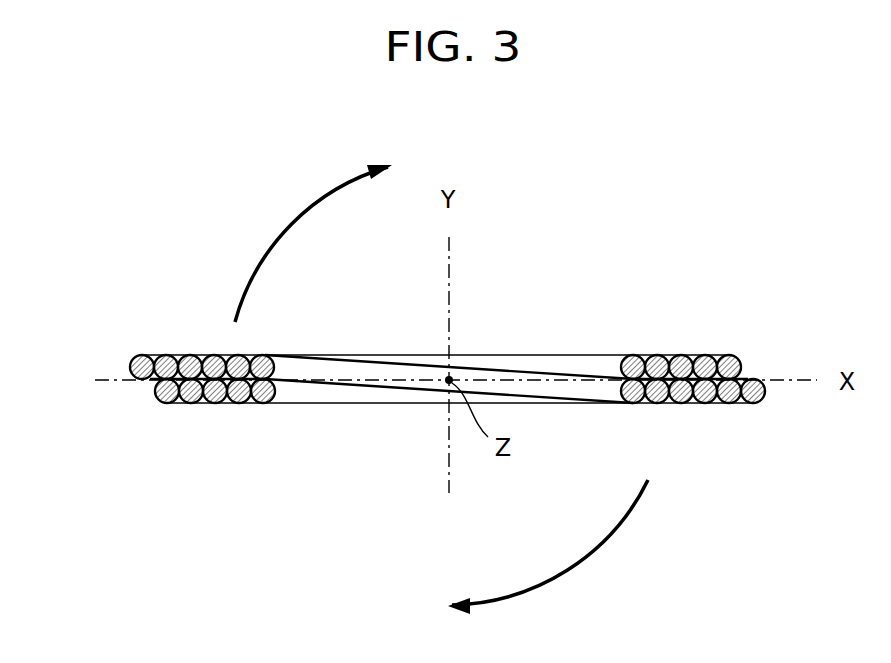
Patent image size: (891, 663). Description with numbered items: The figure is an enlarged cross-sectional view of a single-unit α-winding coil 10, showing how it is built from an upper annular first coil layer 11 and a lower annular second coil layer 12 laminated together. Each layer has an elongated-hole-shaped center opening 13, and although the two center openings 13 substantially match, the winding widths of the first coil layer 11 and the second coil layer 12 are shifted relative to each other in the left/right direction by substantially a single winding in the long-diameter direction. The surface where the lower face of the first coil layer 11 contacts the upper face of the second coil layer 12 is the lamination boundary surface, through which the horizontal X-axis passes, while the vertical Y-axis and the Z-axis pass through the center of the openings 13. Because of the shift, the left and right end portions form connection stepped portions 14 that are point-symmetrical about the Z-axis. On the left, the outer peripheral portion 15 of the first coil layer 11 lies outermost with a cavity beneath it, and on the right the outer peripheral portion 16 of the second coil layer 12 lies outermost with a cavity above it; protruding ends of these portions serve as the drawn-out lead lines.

The α-winding coil 10 is at (616, 280).
The first coil layer 11 is at (140, 375).
The second coil layer 12 is at (158, 395).
The center opening 13 is at (549, 360).
The connection stepped portion 14 is at (140, 408).
The outer peripheral portion 15 is at (135, 360).
The outer peripheral portion 16 is at (765, 397).